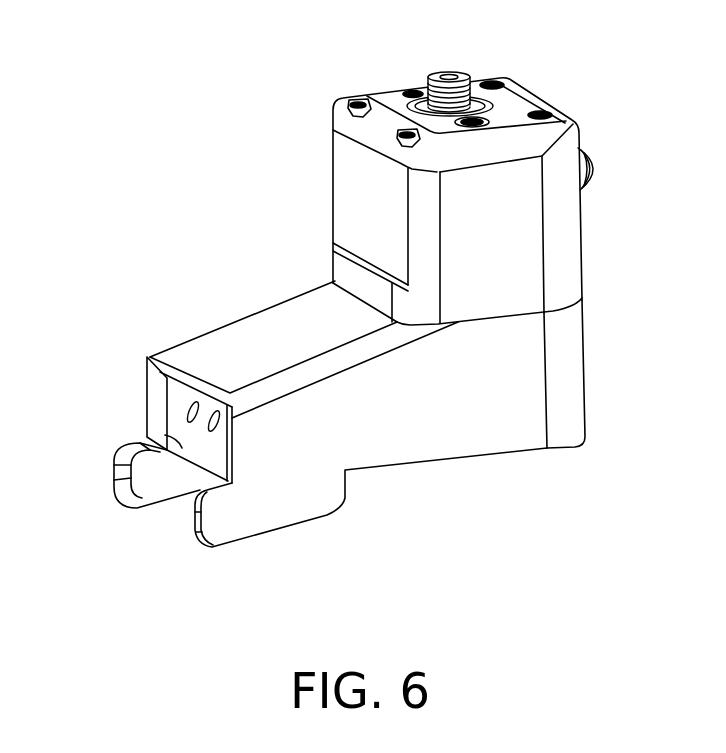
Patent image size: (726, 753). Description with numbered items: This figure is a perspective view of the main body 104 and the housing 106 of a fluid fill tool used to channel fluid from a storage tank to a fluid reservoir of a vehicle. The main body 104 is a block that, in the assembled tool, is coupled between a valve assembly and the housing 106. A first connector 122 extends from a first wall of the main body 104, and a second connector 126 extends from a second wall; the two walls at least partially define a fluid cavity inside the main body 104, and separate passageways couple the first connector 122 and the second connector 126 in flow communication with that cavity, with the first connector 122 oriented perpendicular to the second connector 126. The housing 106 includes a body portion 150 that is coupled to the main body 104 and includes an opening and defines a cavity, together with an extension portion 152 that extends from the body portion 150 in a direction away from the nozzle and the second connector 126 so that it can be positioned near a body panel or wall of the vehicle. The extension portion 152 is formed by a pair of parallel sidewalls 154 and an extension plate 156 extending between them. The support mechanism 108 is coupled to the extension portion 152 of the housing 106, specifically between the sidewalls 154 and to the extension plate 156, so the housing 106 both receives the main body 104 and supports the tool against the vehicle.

The main body 104 is at (345, 184).
The housing 106 is at (558, 348).
The support mechanism 108 is at (205, 402).
The first connector 122 is at (594, 165).
The second connector 126 is at (457, 75).
The body portion 150 is at (462, 412).
The extension portion 152 is at (150, 357).
The sidewalls 154 is at (150, 440).
The extension plate 156 is at (270, 322).